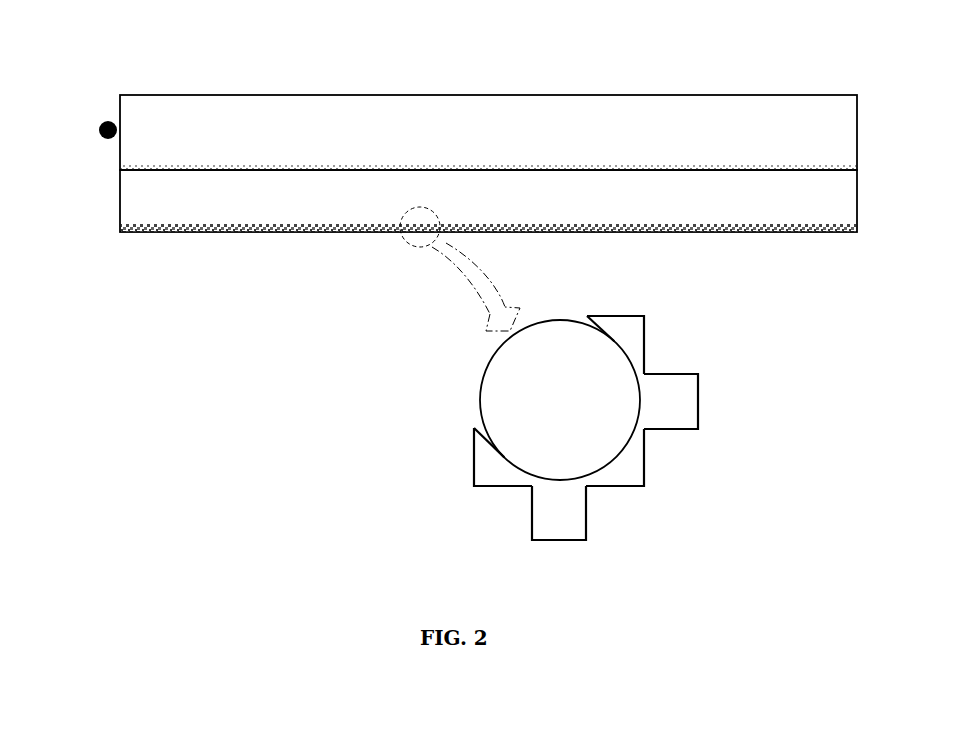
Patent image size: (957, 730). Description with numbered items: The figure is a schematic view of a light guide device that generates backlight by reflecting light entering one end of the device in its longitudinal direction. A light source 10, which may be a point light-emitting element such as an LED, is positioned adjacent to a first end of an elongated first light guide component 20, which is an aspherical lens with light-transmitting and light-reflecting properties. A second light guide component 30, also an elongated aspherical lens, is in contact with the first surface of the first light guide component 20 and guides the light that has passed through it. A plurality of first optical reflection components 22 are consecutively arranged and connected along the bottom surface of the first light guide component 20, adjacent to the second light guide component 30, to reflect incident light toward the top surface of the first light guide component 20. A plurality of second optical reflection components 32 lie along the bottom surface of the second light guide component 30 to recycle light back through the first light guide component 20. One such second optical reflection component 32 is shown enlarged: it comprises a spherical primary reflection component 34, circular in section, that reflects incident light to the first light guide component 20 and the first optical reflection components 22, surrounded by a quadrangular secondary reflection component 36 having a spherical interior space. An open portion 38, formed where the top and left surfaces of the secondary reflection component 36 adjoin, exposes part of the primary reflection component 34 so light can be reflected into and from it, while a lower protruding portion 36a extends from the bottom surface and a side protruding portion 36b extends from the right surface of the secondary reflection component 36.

The light source 10 is at (99, 128).
The first light guide component 20 is at (163, 102).
The first optical reflection components 22 is at (232, 168).
The second light guide component 30 is at (130, 195).
The second optical reflection components 32 is at (149, 234).
The primary reflection component 34 is at (545, 336).
The secondary reflection component 36 is at (629, 426).
The lower protruding portion 36a is at (555, 542).
The side protruding portion 36b is at (699, 398).
The open portion 38 is at (588, 315).